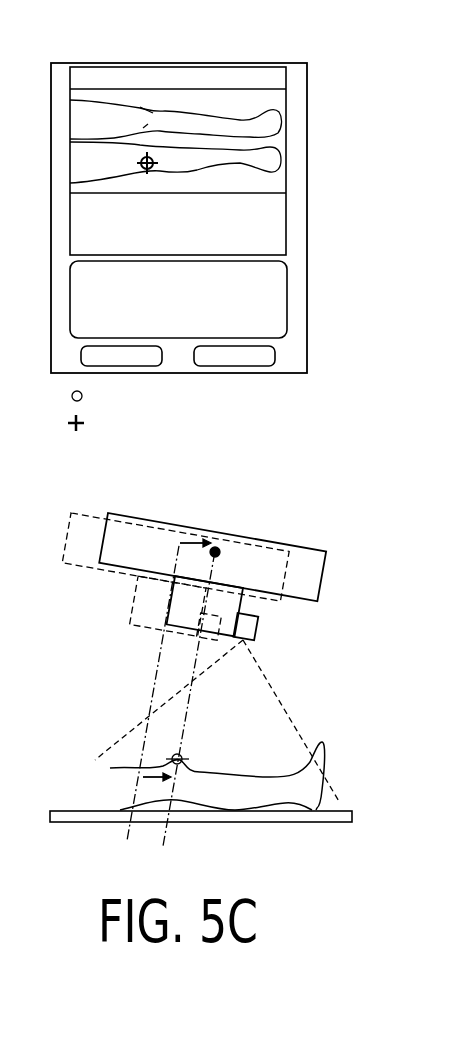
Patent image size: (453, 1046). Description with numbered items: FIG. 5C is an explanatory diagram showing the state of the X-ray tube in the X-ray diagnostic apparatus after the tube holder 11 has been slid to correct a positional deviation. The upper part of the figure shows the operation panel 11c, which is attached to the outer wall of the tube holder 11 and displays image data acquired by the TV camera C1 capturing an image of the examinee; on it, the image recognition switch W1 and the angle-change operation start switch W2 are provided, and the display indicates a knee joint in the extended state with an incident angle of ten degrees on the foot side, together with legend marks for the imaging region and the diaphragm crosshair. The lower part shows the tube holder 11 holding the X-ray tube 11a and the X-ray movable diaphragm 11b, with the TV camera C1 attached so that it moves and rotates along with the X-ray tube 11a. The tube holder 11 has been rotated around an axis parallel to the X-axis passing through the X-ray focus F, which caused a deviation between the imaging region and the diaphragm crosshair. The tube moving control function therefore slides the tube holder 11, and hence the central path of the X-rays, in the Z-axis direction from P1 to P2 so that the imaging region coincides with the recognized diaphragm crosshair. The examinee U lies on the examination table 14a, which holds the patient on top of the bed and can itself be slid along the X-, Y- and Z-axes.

The tube holder 11 is at (226, 575).
The X-ray tube 11a is at (322, 582).
The X-ray movable diaphragm 11b is at (172, 597).
The operation panel 11c is at (307, 88).
The TV camera C1 is at (258, 626).
The X-ray focus F is at (217, 546).
The position of the central path of X-rays before sliding P1 is at (154, 672).
The position of the central path of X-rays after sliding P2 is at (185, 710).
The subject leg U is at (210, 772).
The image recognition switch W1 is at (82, 354).
The angle-change operation start switch W2 is at (275, 354).
The examination table 14a is at (290, 822).